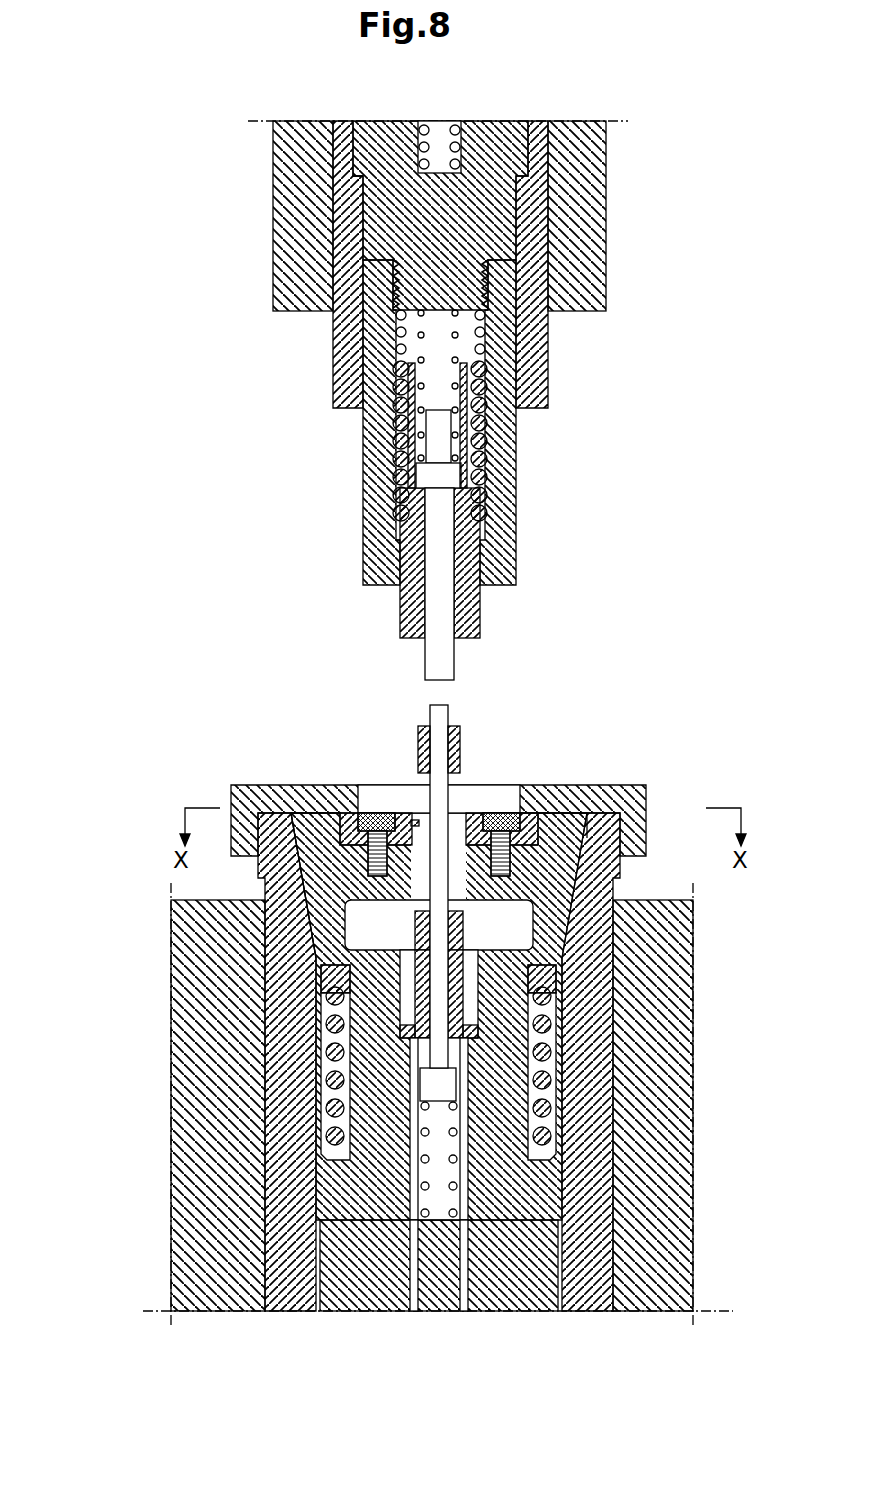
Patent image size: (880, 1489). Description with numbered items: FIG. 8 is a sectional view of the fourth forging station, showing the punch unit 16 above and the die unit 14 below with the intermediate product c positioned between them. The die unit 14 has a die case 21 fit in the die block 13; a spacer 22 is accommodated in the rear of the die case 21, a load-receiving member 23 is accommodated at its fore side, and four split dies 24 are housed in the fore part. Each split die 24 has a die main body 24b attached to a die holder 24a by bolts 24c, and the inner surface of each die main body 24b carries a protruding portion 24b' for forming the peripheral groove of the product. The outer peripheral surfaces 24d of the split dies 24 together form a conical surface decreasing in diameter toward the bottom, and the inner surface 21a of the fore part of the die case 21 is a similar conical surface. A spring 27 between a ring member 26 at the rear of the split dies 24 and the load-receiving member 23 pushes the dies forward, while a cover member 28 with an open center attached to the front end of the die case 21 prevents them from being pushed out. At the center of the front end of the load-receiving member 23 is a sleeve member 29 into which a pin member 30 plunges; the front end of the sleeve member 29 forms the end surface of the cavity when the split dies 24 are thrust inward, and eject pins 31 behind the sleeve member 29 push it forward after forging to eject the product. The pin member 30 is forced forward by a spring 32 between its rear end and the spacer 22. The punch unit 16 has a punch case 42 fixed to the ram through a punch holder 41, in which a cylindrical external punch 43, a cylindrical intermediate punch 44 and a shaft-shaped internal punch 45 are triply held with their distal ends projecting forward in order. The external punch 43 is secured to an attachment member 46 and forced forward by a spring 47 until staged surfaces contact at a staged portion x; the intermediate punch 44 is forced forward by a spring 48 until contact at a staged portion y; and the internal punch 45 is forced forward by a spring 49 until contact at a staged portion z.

The punch unit 16 is at (624, 158).
The punch holder 41 is at (598, 258).
The punch case 42 is at (530, 376).
The external punch 43 is at (510, 484).
The intermediate punch 44 is at (473, 612).
The internal punch 45 is at (447, 655).
The attachment member 46 is at (485, 125).
The spring 47 is at (422, 130).
The spring 48 is at (476, 437).
The spring 49 is at (447, 327).
The staged portion x is at (346, 172).
The staged portion y is at (388, 537).
The staged portion z is at (400, 496).
The die unit 14 is at (688, 742).
The die block 13 is at (672, 1250).
The die case 21 is at (588, 1048).
The inner surface of the fore part of the die case 21a is at (600, 877).
The spacer 22 is at (528, 1240).
The load-receiving member 23 is at (535, 1176).
The split die 24 is at (296, 805).
The die holder 24a is at (513, 808).
The die main body 24b is at (463, 793).
The protruding portion 24b' is at (391, 782).
The bolt 24c is at (491, 808).
The outer peripheral surface 24d is at (592, 830).
The ring member 26 is at (534, 966).
The spring 27 is at (534, 1016).
The cover member 28 is at (606, 783).
The sleeve member 29 is at (452, 906).
The pin member 30 is at (425, 897).
The eject pin 31 is at (417, 1133).
The spring 32 is at (405, 1164).
The intermediate product c is at (449, 716).